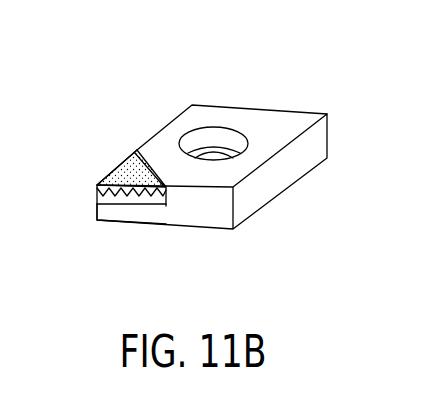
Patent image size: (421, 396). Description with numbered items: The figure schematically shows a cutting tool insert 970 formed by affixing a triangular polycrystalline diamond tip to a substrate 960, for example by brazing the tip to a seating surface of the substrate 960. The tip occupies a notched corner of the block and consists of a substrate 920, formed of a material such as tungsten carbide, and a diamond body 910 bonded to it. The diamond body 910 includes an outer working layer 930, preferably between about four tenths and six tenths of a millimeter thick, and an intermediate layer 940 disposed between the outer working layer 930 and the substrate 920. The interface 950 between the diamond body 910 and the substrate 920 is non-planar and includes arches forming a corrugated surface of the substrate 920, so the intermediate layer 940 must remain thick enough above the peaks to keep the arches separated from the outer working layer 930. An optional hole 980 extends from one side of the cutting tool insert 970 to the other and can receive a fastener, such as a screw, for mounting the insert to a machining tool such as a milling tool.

The diamond body 910 is at (116, 144).
The substrate 920 is at (115, 197).
The outer working layer 930 is at (127, 178).
The intermediate layer 940 is at (97, 185).
The interface 950 is at (152, 197).
The substrate 960 is at (278, 178).
The cutting tool insert 970 is at (178, 88).
The hole 980 is at (216, 140).